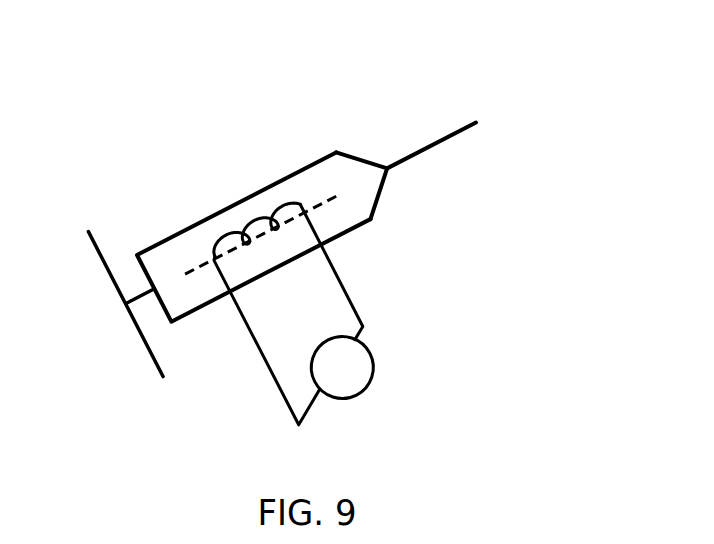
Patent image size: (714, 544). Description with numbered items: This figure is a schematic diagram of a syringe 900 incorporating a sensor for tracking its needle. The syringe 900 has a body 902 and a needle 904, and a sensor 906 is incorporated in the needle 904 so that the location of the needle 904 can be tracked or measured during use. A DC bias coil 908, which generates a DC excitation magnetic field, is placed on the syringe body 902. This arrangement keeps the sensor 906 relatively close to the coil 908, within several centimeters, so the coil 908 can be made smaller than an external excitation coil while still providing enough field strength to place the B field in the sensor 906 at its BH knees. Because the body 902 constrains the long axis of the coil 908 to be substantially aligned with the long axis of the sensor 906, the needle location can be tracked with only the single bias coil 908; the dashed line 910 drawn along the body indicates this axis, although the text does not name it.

The syringe 900 is at (213, 185).
The body 902 is at (370, 192).
The needle 904 is at (455, 131).
The sensor 906 is at (433, 150).
The DC bias coil 908 is at (293, 206).
The central axis 910 is at (327, 207).